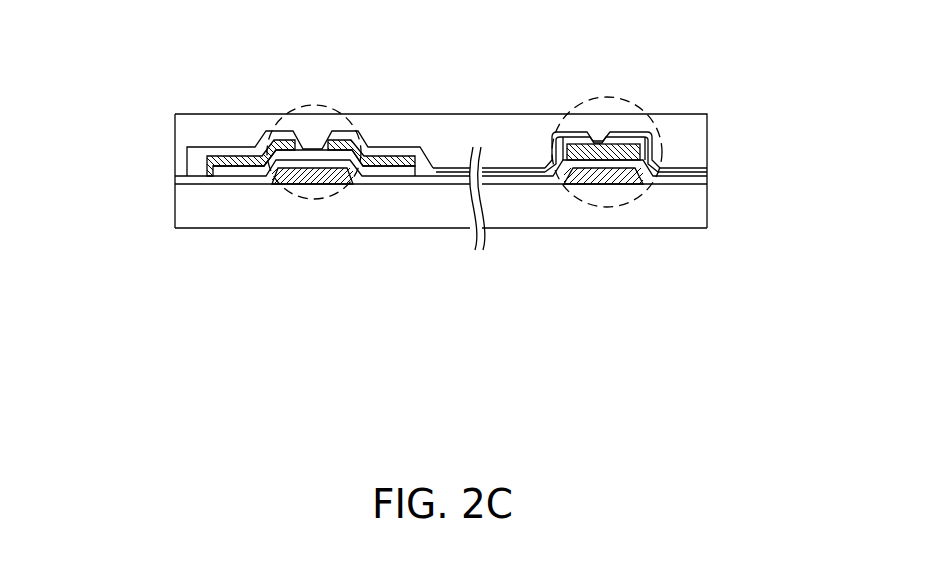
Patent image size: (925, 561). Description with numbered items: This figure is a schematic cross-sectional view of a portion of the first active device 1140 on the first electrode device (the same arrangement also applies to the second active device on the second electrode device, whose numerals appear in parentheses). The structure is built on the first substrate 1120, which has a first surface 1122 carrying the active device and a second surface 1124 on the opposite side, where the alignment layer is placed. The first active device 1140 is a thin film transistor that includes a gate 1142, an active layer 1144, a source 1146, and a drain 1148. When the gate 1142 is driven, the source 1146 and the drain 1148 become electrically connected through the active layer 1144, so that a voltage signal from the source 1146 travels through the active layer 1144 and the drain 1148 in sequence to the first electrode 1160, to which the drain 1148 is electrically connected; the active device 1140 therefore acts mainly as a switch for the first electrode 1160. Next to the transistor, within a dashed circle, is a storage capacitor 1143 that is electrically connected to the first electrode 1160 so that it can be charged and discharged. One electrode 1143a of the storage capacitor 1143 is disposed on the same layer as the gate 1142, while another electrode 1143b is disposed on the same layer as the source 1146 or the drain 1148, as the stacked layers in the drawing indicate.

The first substrate 1120 is at (698, 200).
The first surface 1122 is at (443, 183).
The second surface 1124 is at (677, 228).
The first active device 1140 is at (358, 133).
The gate 1142 is at (284, 179).
The active layer 1144 is at (221, 172).
The source 1146 is at (263, 152).
The drain 1148 is at (381, 145).
The first electrode 1160 is at (502, 167).
The storage capacitor 1143 is at (672, 115).
The electrode of the storage capacitor 1143a is at (628, 178).
The another electrode of the storage capacitor 1143b is at (632, 153).